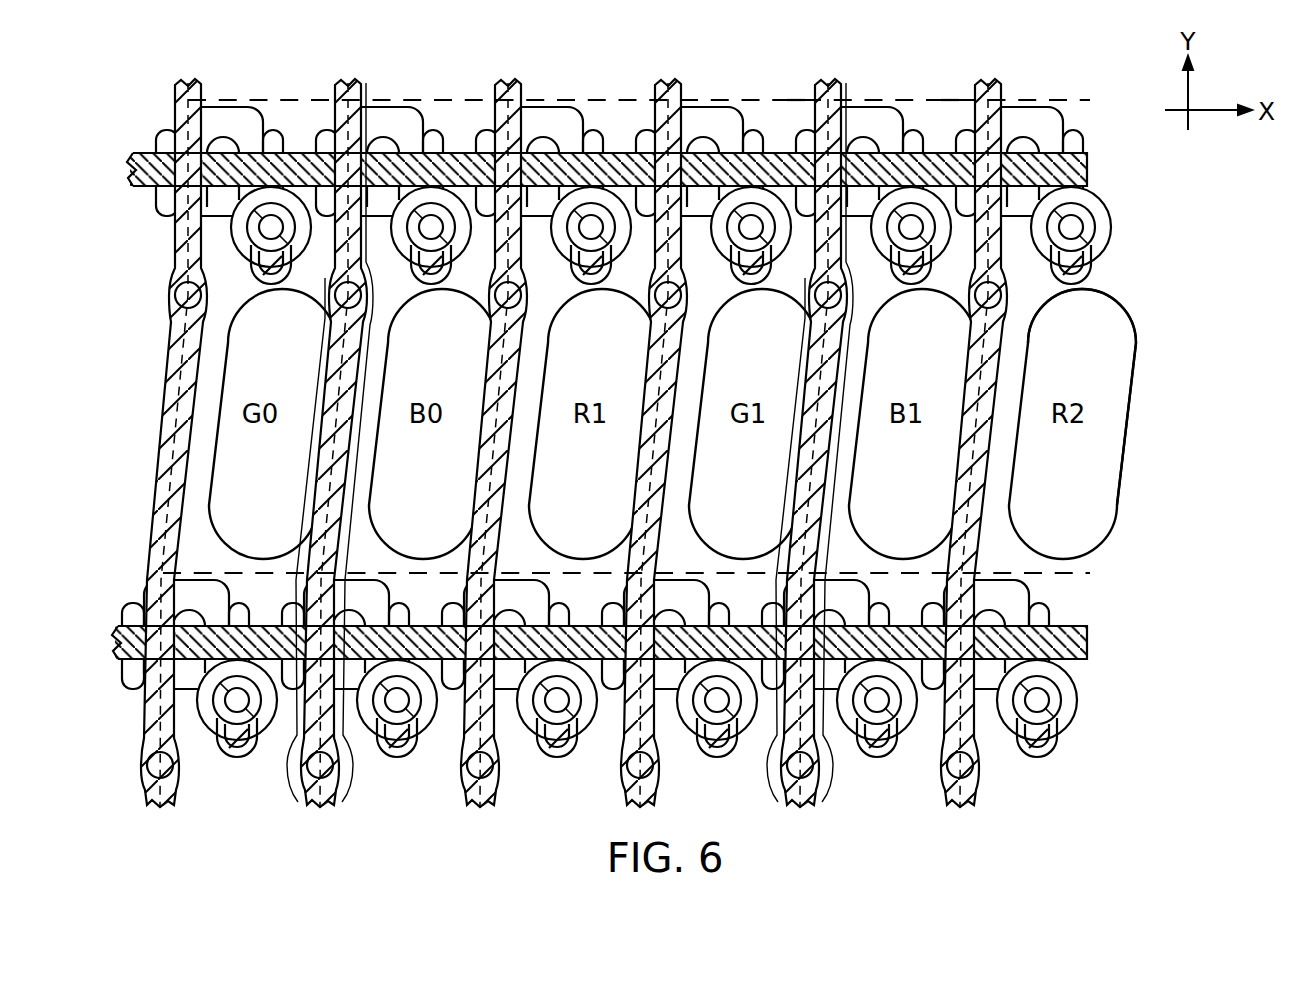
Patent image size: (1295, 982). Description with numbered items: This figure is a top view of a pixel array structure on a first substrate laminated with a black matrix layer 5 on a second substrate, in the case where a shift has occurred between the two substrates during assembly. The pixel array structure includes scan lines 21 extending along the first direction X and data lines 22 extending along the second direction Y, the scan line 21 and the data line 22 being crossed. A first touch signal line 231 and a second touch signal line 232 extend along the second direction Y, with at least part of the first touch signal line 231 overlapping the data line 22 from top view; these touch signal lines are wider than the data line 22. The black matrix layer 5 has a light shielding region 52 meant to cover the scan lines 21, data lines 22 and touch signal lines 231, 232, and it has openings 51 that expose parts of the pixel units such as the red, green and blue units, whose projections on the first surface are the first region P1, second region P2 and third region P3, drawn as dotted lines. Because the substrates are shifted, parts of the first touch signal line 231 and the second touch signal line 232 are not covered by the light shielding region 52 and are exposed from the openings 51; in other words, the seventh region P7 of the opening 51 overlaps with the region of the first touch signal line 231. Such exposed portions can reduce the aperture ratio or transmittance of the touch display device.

The scan line 21 is at (133, 172).
The data line 22 is at (188, 84).
The black matrix layer 5 is at (1132, 410).
The opening 51 is at (1167, 424).
The light shielding region 52 is at (1124, 285).
The first touch signal line 231 is at (824, 786).
The second touch signal line 232 is at (290, 786).
The first region P1 is at (596, 100).
The second region P2 is at (790, 100).
The third region P3 is at (940, 100).
The seventh region P7 is at (717, 190).